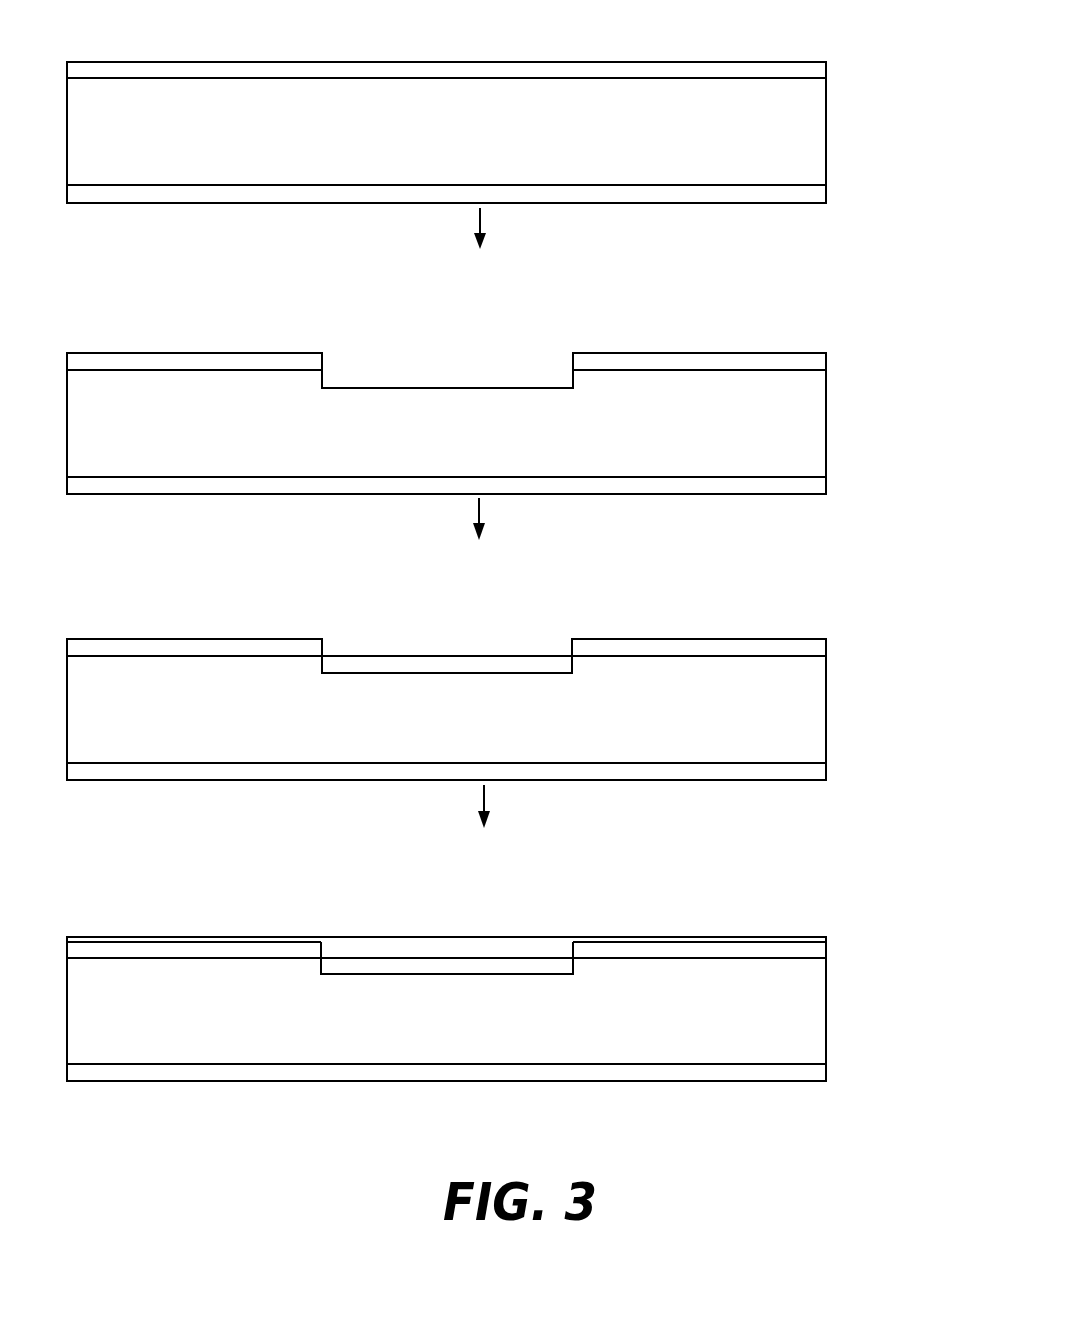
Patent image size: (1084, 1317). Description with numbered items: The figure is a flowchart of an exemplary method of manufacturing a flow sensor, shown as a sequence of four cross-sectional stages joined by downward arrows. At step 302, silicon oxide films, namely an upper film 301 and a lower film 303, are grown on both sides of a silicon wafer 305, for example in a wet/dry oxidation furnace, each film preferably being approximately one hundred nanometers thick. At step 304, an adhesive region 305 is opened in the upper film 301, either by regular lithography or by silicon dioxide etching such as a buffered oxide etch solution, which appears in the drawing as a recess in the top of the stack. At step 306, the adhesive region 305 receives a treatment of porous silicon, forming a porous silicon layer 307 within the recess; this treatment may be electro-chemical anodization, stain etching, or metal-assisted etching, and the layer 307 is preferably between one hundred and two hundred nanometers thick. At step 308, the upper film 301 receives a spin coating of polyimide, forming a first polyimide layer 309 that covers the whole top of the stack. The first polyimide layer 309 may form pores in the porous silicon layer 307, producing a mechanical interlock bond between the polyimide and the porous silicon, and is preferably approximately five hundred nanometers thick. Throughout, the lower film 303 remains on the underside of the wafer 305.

The upper film 301 is at (818, 72).
The step 302 is at (498, 29).
The film 303 is at (815, 193).
The step 304 is at (498, 281).
The silicon wafer 305 is at (815, 128).
The step 306 is at (498, 566).
The porous silicon layer 307 is at (490, 660).
The step 308 is at (503, 856).
The first polyimide layer 309 is at (335, 945).